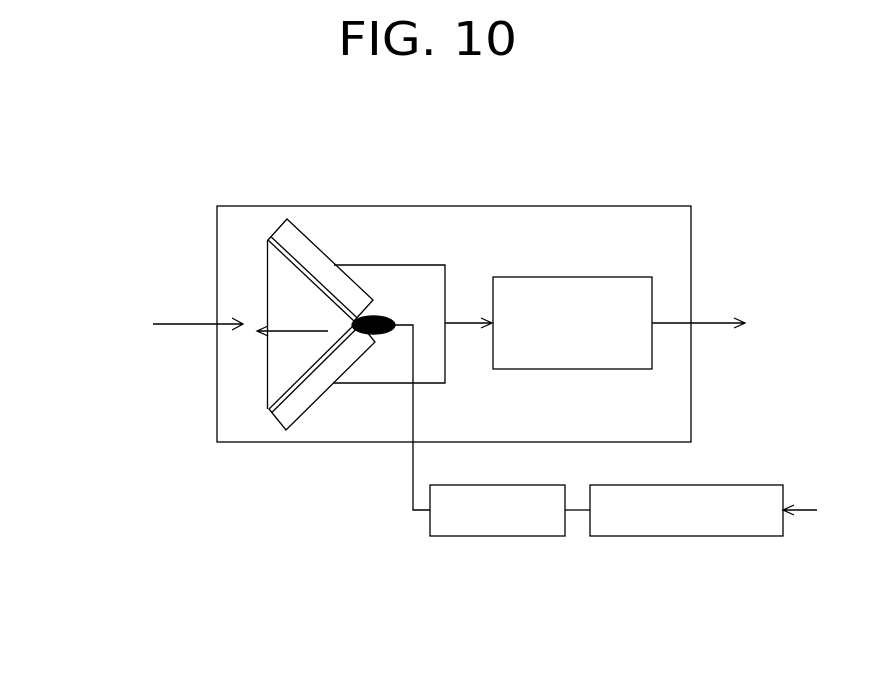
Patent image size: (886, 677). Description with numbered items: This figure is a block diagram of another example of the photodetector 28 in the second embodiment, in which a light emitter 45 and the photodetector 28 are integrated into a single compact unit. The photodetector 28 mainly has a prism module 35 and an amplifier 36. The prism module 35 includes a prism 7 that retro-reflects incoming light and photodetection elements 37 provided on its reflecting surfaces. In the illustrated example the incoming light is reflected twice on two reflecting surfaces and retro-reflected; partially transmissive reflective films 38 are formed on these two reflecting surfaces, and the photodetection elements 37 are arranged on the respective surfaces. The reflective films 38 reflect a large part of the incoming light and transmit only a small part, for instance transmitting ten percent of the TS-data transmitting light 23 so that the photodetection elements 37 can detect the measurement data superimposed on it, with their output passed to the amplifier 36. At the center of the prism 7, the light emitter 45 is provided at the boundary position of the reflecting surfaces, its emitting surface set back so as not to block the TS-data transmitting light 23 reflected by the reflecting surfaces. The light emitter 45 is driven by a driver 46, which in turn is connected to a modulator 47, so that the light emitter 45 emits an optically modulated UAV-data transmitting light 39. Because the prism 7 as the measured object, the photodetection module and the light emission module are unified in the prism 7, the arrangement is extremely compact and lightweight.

The prism 7 is at (300, 333).
The TS-data transmitting light 23 is at (187, 324).
The photodetector 28 is at (540, 205).
The prism module 35 is at (256, 282).
The amplifier 36 is at (545, 370).
The photodetection element 37 is at (320, 248).
The partially transmissive reflective film 38 is at (268, 240).
The UAV-data transmitting light 39 is at (300, 353).
The light emitter 45 is at (377, 313).
The driver 46 is at (497, 537).
The modulator 47 is at (688, 535).